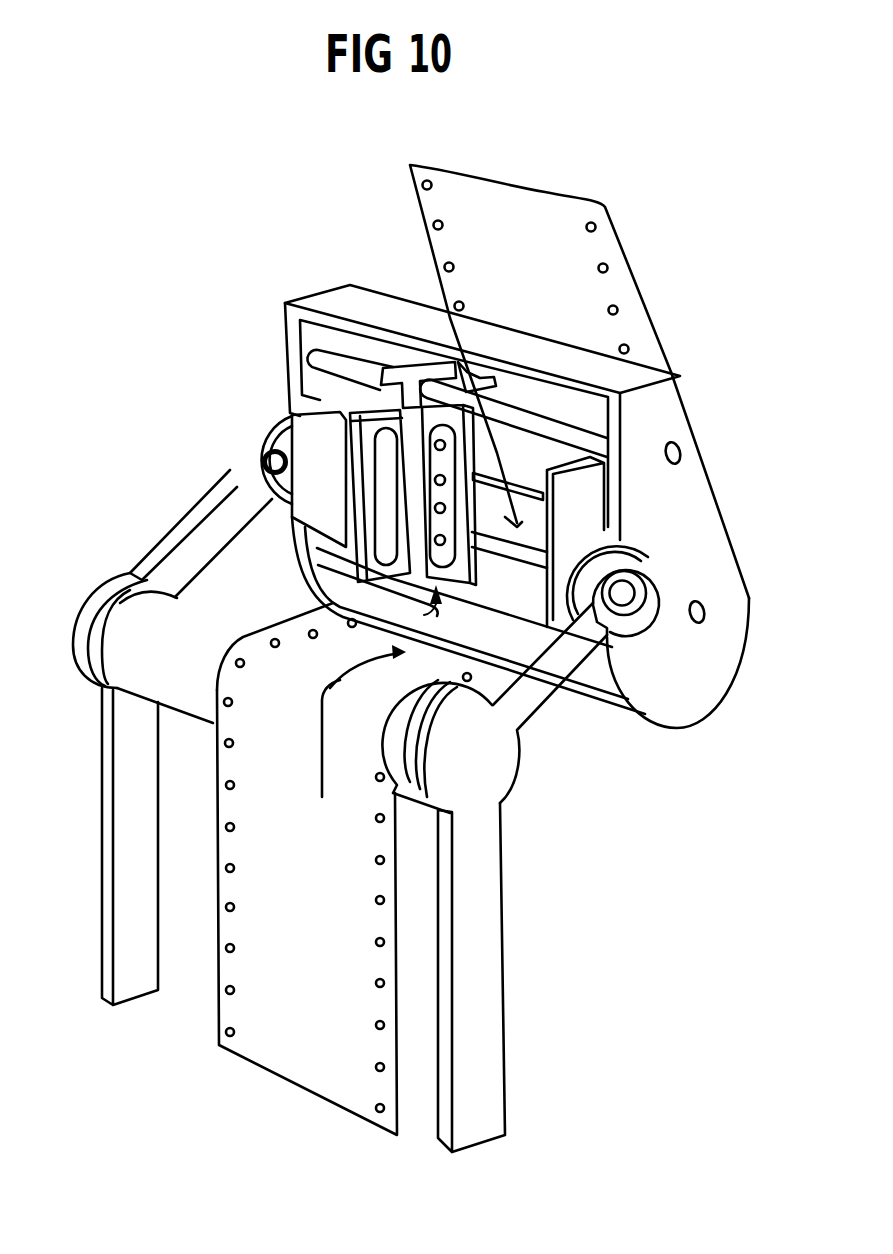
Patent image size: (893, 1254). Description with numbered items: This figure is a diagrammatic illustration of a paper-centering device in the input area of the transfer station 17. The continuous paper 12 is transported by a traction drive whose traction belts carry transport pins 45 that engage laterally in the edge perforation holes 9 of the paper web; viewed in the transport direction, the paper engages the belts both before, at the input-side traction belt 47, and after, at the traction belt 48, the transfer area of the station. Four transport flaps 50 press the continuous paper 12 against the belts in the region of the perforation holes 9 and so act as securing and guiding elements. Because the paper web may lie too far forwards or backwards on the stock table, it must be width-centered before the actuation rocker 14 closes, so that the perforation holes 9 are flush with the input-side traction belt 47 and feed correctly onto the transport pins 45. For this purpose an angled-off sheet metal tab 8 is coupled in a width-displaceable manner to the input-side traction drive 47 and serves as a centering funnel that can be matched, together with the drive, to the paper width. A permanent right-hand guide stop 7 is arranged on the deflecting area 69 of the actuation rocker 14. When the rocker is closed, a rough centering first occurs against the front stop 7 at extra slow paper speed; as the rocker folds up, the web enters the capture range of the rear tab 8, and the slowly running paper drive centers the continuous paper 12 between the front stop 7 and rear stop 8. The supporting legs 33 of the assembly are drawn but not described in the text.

The continuous paper 12 is at (610, 253).
The transfer station 17 is at (730, 601).
The traction belt after the transfer area 48 is at (490, 376).
The transport flap 50 is at (381, 405).
The transport pin 45 is at (442, 448).
The sheet metal tab 8 is at (300, 450).
The input-side traction belt 47 is at (312, 593).
The deflecting area 69 is at (130, 652).
The support leg 33 is at (110, 812).
The perforation holes 9 is at (235, 1040).
The right-hand guide stop 7 is at (400, 748).
The actuation rocker 14 is at (525, 884).